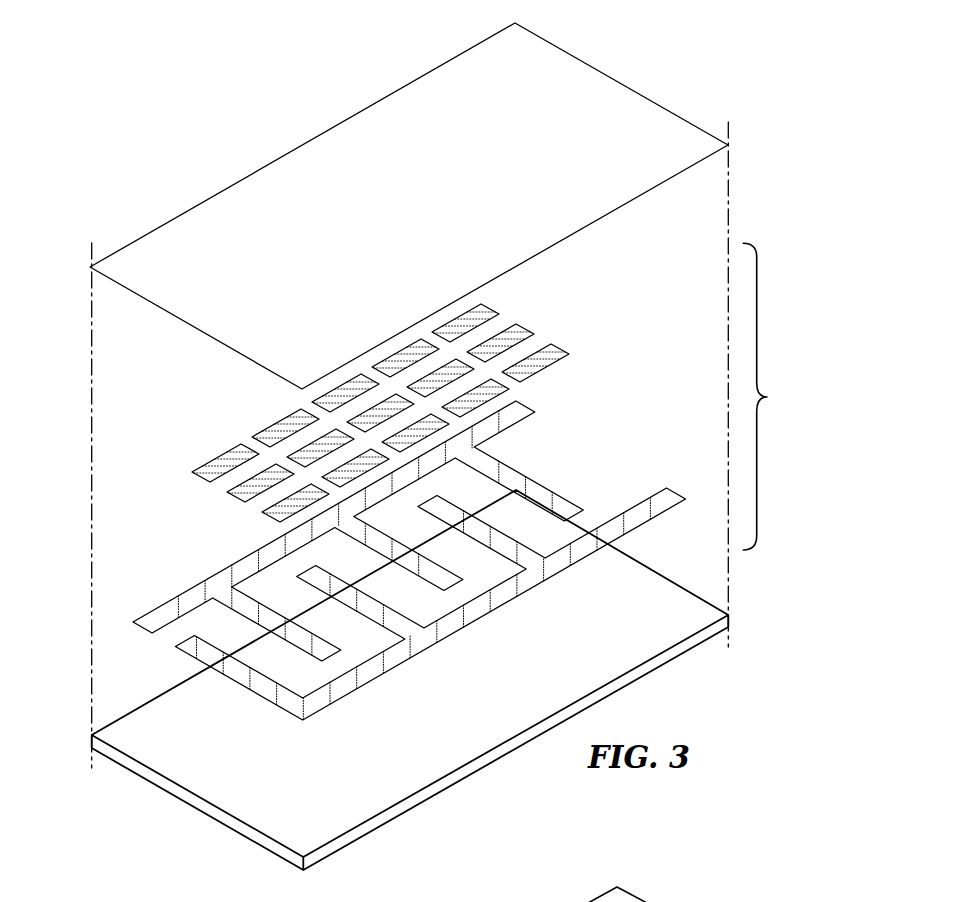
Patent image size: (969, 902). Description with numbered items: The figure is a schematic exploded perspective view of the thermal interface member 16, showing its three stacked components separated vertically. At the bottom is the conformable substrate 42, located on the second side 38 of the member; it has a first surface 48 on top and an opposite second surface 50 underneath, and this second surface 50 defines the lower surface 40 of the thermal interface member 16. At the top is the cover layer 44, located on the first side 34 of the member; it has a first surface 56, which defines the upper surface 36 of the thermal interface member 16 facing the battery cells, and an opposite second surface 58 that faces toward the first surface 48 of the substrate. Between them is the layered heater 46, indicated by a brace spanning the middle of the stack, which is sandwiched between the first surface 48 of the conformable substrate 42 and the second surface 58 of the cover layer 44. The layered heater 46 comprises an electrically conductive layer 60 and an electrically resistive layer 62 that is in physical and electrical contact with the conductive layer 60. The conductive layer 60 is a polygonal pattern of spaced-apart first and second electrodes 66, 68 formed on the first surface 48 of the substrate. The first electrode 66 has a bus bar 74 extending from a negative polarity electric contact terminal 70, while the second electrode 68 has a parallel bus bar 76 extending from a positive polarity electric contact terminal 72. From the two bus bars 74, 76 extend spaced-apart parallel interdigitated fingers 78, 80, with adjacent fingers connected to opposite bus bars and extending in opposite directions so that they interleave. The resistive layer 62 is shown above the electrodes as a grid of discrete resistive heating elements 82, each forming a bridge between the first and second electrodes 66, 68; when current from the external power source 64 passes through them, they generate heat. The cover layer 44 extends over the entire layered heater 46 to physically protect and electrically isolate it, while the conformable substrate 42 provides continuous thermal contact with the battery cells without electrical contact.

The thermal interface member 16 is at (218, 150).
The first side 34 is at (176, 243).
The upper surface 36 is at (560, 62).
The first surface 56 is at (411, 206).
The second surface 58 is at (137, 297).
The cover layer 44 is at (690, 122).
The electrically resistive layer 62 is at (197, 452).
The resistive heating element 82 is at (530, 330).
The electrically conductive layer 60 is at (232, 693).
The first electrode 66 is at (237, 567).
The bus bar 74 is at (170, 620).
The negative polarity electric contact terminal 70 is at (525, 410).
The interdigitated fingers 78 is at (513, 473).
The second electrode 68 is at (338, 705).
The bus bar 76 is at (568, 545).
The positive polarity electric contact terminal 72 is at (680, 494).
The interdigitated fingers 80 is at (497, 553).
The second side 38 is at (130, 790).
The lower surface 40 is at (257, 843).
The second surface 50 is at (458, 690).
The conformable substrate 42 is at (732, 622).
The first surface 48 is at (602, 670).
The layered heater 46 is at (767, 397).
The external power source 64 is at (737, 901).